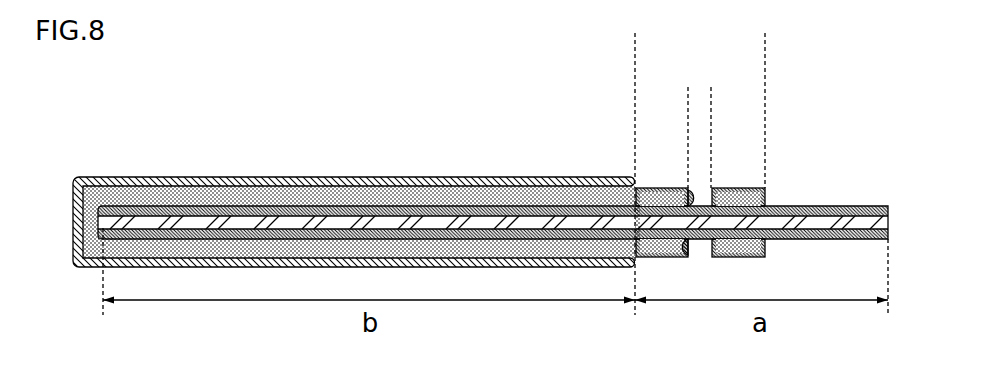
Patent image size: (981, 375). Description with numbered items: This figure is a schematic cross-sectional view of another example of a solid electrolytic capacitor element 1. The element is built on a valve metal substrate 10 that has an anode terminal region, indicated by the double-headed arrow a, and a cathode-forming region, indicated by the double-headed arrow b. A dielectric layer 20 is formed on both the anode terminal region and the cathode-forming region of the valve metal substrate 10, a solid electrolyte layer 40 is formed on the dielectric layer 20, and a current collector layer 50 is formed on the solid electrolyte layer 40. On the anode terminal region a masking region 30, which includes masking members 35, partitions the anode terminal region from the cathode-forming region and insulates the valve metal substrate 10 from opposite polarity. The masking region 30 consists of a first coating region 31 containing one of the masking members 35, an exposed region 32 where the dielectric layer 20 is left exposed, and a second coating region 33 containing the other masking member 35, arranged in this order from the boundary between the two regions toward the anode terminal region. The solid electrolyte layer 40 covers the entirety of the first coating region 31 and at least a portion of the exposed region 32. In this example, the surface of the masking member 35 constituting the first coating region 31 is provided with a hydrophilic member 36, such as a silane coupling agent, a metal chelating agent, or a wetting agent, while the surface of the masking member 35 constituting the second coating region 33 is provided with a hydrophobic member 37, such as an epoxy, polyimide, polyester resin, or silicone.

The solid electrolytic capacitor element 1 is at (226, 110).
The valve metal substrate 10 is at (828, 216).
The dielectric layer 20 is at (555, 207).
The masking region 30 is at (635, 39).
The first coating region 31 is at (688, 143).
The exposed region 32 is at (664, 92).
The second coating region 33 is at (711, 143).
The masking member 35 is at (748, 189).
The hydrophilic member 36 is at (695, 246).
The hydrophobic member 37 is at (745, 210).
The solid electrolyte layer 40 is at (402, 197).
The current collector layer 50 is at (141, 178).